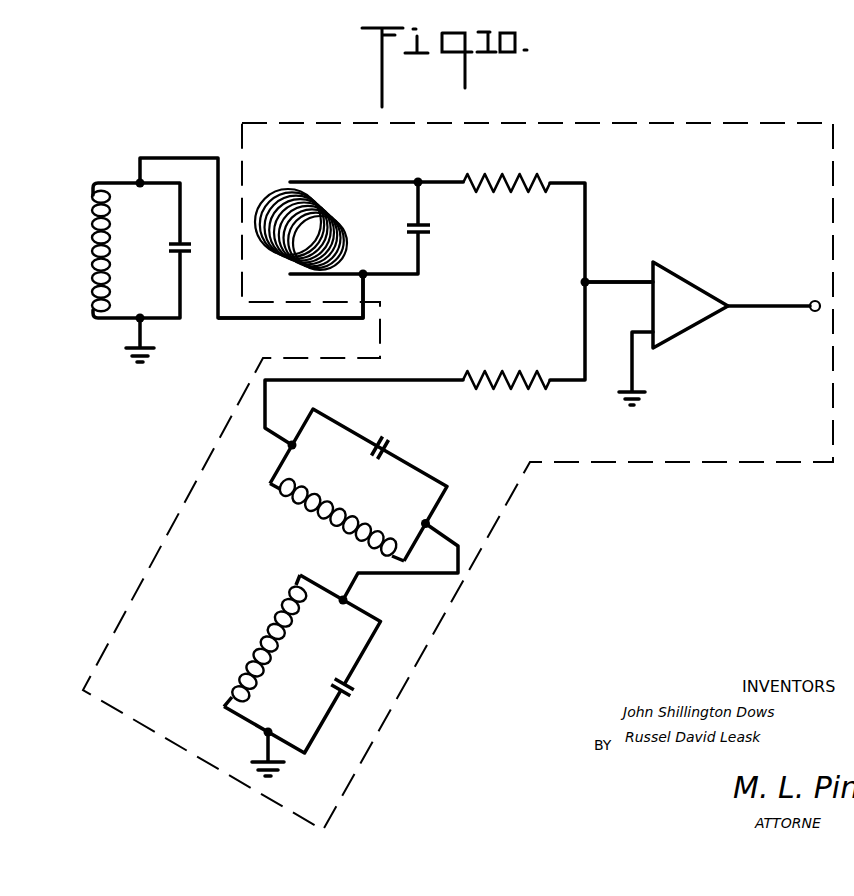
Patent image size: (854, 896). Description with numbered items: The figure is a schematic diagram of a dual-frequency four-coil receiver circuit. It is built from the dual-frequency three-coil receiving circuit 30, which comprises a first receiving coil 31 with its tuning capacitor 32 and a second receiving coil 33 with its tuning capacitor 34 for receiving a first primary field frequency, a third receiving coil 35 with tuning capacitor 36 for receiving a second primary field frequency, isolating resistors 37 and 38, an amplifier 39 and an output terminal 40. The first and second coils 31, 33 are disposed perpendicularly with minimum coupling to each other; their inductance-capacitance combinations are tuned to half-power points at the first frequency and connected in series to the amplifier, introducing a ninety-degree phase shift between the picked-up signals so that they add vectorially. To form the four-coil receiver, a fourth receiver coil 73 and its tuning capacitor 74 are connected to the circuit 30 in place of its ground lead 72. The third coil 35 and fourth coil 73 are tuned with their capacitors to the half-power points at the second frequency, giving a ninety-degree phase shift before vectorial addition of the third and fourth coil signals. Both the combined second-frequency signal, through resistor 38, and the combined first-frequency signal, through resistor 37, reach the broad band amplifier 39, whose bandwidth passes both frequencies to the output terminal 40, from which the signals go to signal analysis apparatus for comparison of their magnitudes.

The circuit 30 is at (617, 281).
The first receiving coil 31 is at (312, 513).
The tuning capacitor 32 is at (388, 440).
The second receiving coil 33 is at (268, 632).
The tuning capacitor 34 is at (345, 678).
The third receiving coil 35 is at (372, 227).
The tuning capacitor 36 is at (430, 232).
The isolating resistor 37 is at (522, 376).
The isolating resistor 38 is at (537, 192).
The amplifier 39 is at (698, 285).
The output terminal 40 is at (810, 314).
The ground lead 72 is at (370, 290).
The fourth receiver coil 73 is at (93, 203).
The tuning capacitor 74 is at (170, 247).